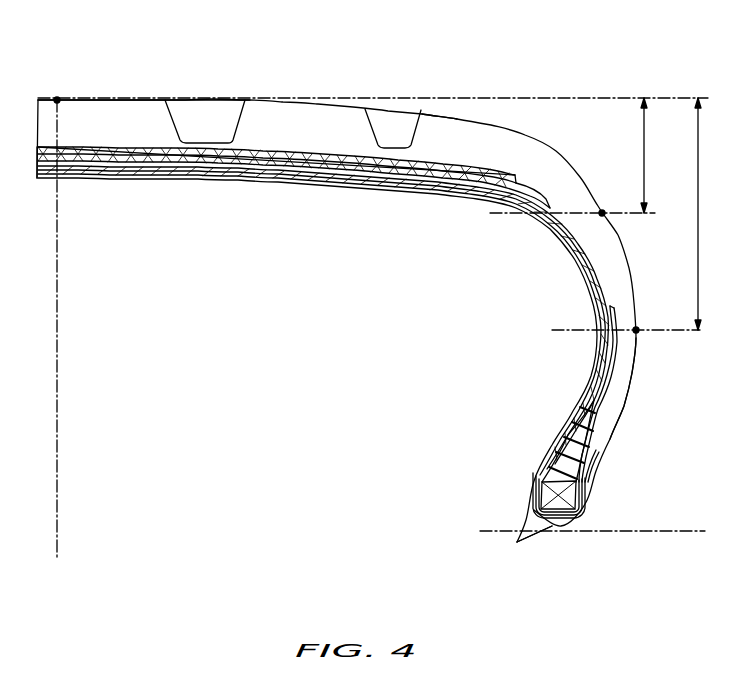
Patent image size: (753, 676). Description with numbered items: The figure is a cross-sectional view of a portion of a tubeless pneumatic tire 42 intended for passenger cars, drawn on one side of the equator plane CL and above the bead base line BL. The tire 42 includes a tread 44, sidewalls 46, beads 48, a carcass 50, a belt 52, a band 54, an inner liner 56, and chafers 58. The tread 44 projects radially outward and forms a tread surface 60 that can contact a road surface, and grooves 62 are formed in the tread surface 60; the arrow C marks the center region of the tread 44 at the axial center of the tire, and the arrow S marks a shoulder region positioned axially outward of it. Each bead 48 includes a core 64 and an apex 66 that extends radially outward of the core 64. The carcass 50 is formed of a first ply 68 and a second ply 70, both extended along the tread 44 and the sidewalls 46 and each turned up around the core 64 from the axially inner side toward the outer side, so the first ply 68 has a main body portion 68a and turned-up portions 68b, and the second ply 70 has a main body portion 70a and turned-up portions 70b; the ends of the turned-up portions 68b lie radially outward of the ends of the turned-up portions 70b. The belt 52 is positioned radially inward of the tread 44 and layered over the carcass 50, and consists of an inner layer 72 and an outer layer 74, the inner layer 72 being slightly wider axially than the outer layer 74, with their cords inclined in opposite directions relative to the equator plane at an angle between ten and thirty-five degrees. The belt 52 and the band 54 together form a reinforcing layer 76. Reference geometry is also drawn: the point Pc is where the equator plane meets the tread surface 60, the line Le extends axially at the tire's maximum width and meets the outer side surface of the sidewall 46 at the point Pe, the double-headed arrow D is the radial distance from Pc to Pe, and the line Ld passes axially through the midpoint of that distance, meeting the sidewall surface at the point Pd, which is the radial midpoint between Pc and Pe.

The pneumatic tire 42 is at (630, 41).
The tread 44 is at (373, 88).
The sidewall 46 is at (633, 385).
The bead 48 is at (517, 454).
The carcass 50 is at (371, 342).
The belt 52 is at (294, 202).
The band 54 is at (104, 146).
The inner liner 56 is at (415, 192).
The chafer 58 is at (556, 528).
The tread surface 60 is at (298, 97).
The groove 62 is at (233, 112).
The core 64 is at (552, 494).
The apex 66 is at (563, 457).
The first ply 68 is at (371, 340).
The main body portion 68a is at (580, 408).
The turned-up portion 68b is at (622, 347).
The second ply 70 is at (352, 344).
The main body portion 70a is at (587, 392).
The turned-up portion 70b is at (592, 460).
The inner layer 72 is at (193, 226).
The outer layer 74 is at (177, 170).
The reinforcing layer 76 is at (68, 146).
The point Pc is at (58, 98).
The center region C is at (86, 100).
The shoulder region S is at (451, 117).
The point Pd is at (602, 211).
The straight line Ld is at (630, 214).
The point Pe is at (637, 328).
The straight line Le is at (670, 329).
The bead base line BL is at (680, 530).
The equator plane CL is at (60, 478).
The distance D is at (706, 214).